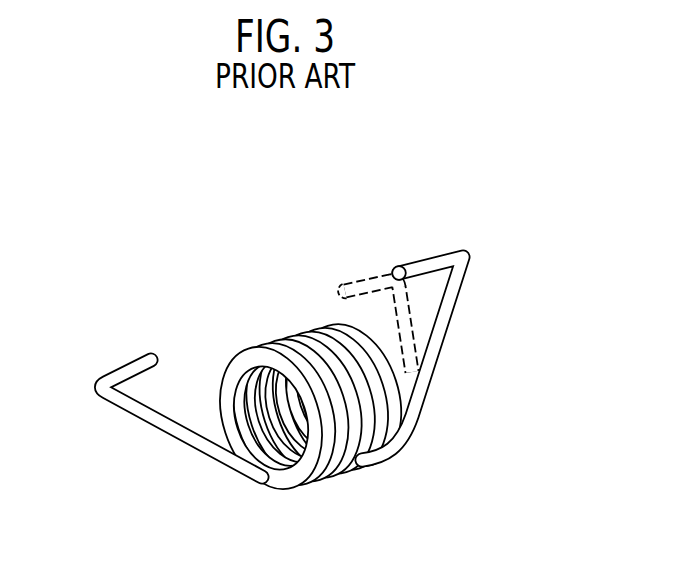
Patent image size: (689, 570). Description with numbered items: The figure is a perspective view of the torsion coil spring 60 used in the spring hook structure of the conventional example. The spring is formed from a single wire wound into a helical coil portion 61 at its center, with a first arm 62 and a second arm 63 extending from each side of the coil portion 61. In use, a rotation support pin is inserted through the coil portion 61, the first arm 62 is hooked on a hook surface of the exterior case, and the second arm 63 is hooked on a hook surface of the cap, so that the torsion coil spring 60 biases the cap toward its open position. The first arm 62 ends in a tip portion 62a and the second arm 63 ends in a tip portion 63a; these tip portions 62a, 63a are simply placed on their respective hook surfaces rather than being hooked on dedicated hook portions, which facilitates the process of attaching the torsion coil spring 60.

The torsion coil spring 60 is at (263, 272).
The coil portion 61 is at (363, 465).
The first arm 62 is at (449, 308).
The tip portion of the first arm 62a is at (437, 257).
The second arm 63 is at (147, 418).
The tip portion of the second arm 63a is at (130, 367).